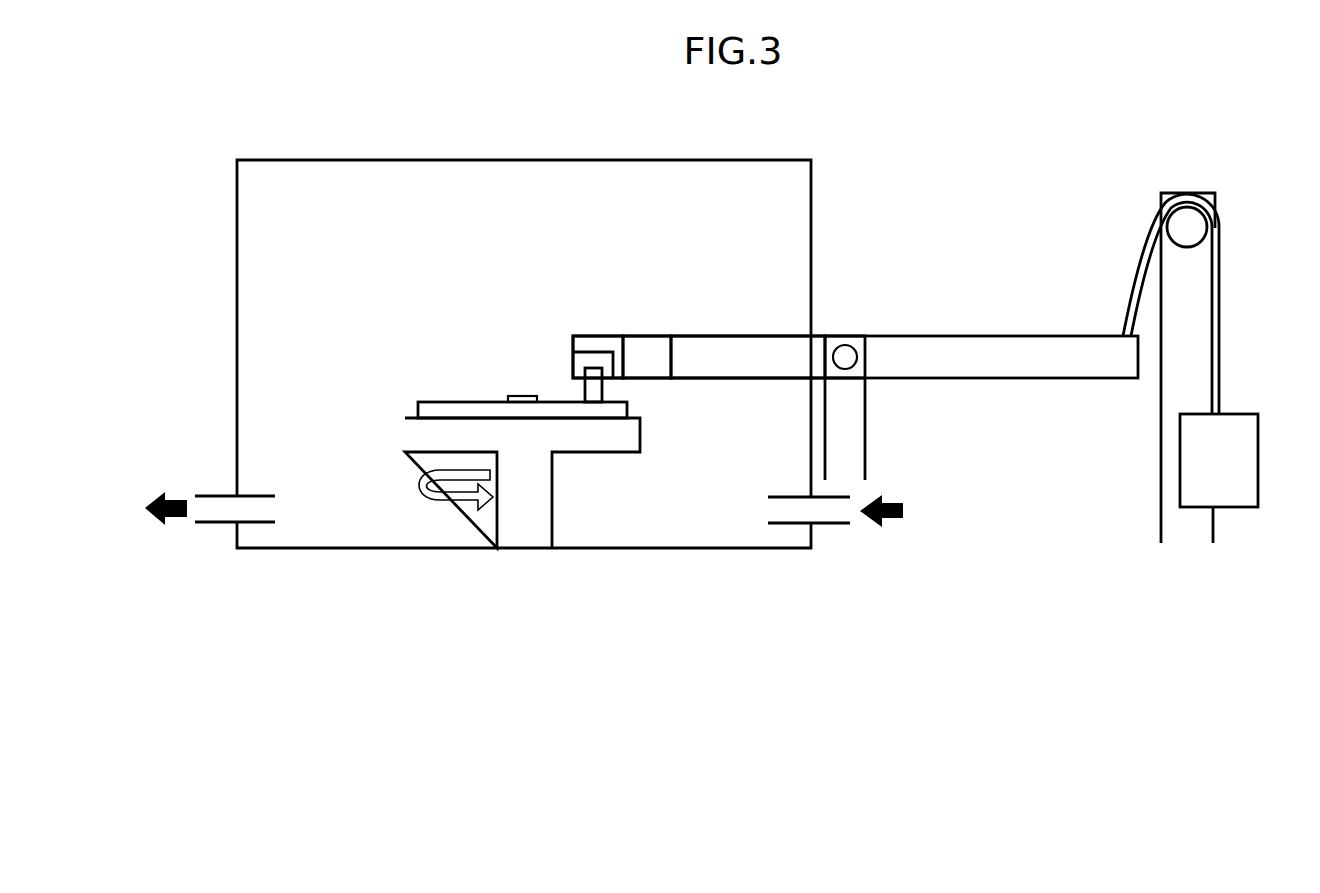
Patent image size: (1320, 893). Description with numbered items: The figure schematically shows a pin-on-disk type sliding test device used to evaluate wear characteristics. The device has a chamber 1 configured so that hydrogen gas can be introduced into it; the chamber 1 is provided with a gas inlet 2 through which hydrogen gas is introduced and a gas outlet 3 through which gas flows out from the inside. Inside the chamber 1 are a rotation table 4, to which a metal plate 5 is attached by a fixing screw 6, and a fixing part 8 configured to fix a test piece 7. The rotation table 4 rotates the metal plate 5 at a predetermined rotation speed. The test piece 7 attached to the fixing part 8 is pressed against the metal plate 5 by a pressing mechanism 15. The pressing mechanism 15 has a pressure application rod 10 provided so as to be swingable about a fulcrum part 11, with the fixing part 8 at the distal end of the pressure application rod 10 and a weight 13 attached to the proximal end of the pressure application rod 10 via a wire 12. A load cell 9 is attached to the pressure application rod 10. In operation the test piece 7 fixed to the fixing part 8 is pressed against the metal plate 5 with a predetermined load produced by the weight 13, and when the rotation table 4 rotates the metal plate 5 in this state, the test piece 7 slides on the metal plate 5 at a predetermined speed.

The chamber 1 is at (237, 238).
The gas inlet 2 is at (835, 515).
The gas outlet 3 is at (208, 502).
The rotation table 4 is at (405, 432).
The metal plate 5 is at (458, 400).
The fixing screw 6 is at (521, 396).
The test piece 7 is at (598, 390).
The fixing part 8 is at (583, 358).
The load cell 9 is at (643, 345).
The pressure application rod 10 is at (748, 350).
The fulcrum part 11 is at (845, 340).
The wire 12 is at (1134, 244).
The weight 13 is at (1245, 508).
The pressing mechanism 15 is at (689, 298).